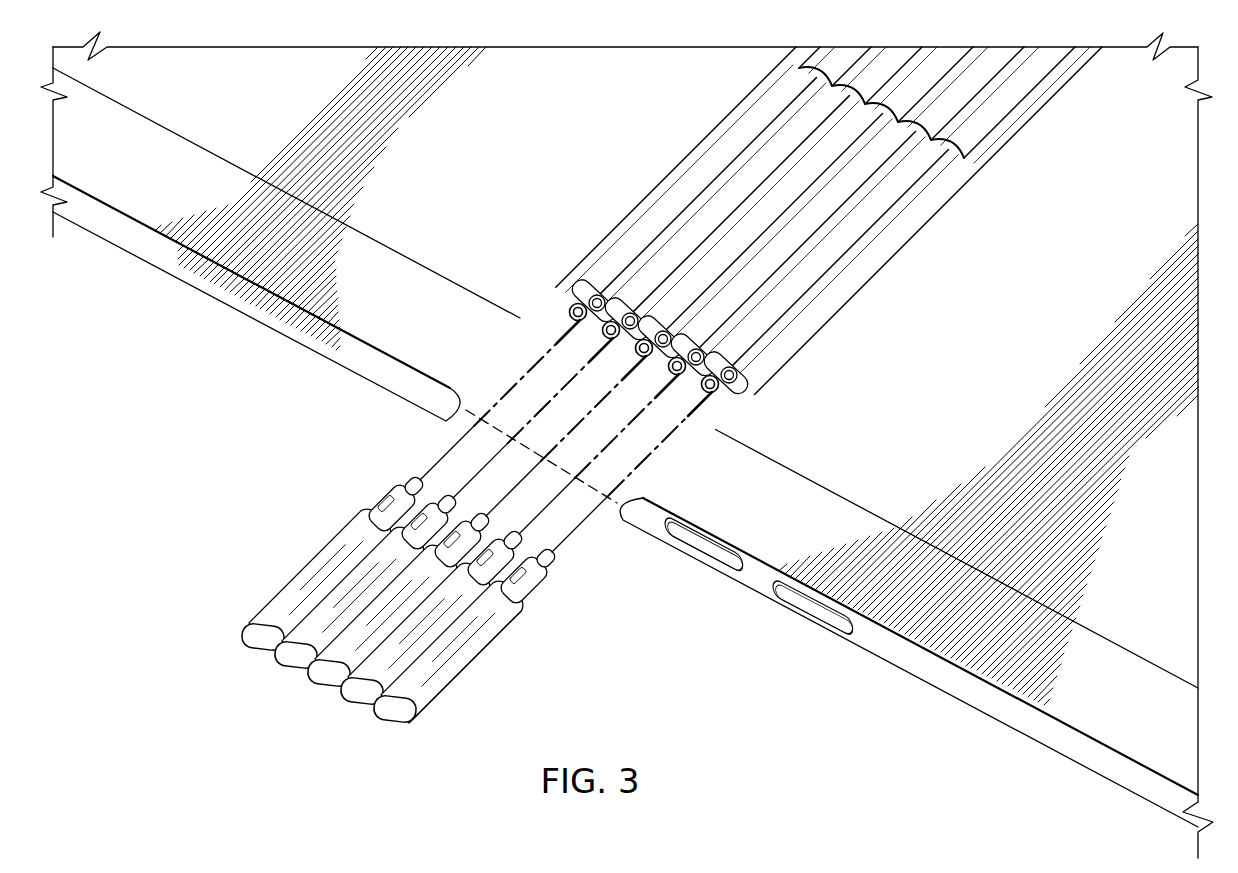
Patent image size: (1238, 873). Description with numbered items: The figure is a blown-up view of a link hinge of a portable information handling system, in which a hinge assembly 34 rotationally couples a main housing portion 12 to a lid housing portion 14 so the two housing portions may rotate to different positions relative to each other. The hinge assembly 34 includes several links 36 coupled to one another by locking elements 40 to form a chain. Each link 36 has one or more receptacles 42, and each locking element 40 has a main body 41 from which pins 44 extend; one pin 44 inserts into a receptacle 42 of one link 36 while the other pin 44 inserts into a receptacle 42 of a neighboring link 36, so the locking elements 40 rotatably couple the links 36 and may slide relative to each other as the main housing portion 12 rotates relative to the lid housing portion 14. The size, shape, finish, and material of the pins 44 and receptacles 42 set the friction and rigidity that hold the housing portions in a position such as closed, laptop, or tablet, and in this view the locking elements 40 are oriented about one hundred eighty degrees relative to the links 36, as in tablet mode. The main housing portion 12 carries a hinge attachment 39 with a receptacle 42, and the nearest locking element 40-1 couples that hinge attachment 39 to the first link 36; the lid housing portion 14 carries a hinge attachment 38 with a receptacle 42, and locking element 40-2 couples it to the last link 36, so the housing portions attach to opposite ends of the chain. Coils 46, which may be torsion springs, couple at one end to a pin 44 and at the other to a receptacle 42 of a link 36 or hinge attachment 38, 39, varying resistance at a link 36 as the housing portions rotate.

The main housing portion 12 is at (243, 313).
The lid housing portion 14 is at (912, 678).
The hinge assembly 34 is at (527, 168).
The links 36 is at (767, 180).
The hinge attachment 38 is at (672, 463).
The hinge attachment 39 is at (653, 213).
The locking elements 40 is at (273, 657).
The locking element 40-1 is at (305, 573).
The locking element 40-2 is at (447, 680).
The main body 41 is at (497, 633).
The receptacles 42 is at (638, 300).
The pins 44 is at (395, 495).
The coils 46 is at (556, 320).